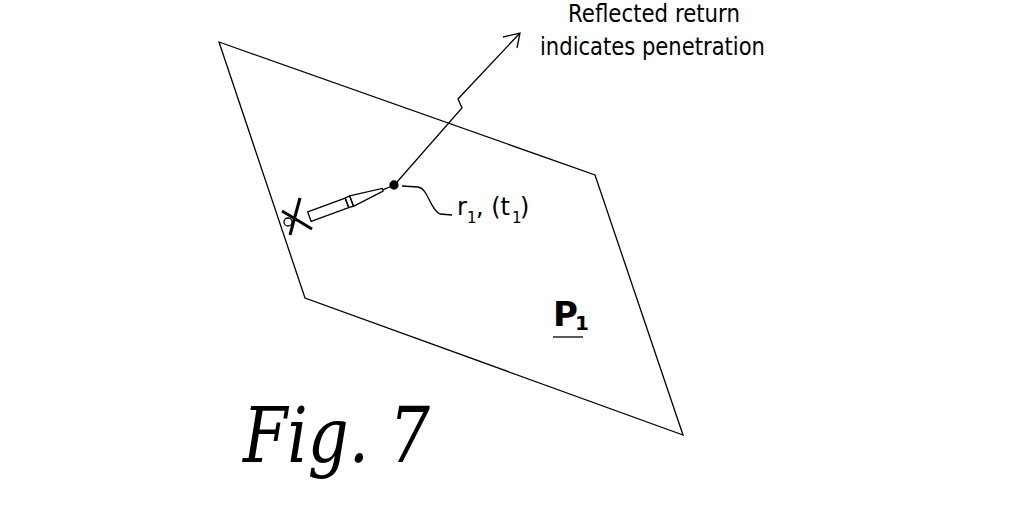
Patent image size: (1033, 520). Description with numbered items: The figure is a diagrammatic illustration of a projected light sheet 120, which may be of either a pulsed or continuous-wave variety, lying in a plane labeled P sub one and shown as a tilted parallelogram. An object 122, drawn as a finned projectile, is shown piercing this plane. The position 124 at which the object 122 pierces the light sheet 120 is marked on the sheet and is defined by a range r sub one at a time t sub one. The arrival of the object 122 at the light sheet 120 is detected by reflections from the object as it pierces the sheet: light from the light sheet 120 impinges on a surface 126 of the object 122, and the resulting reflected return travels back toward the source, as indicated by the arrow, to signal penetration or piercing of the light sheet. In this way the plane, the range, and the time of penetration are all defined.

The projected light sheet 120 is at (262, 143).
The object 122 is at (318, 220).
The piercing position 124 is at (397, 192).
The surface of object 126 is at (385, 178).